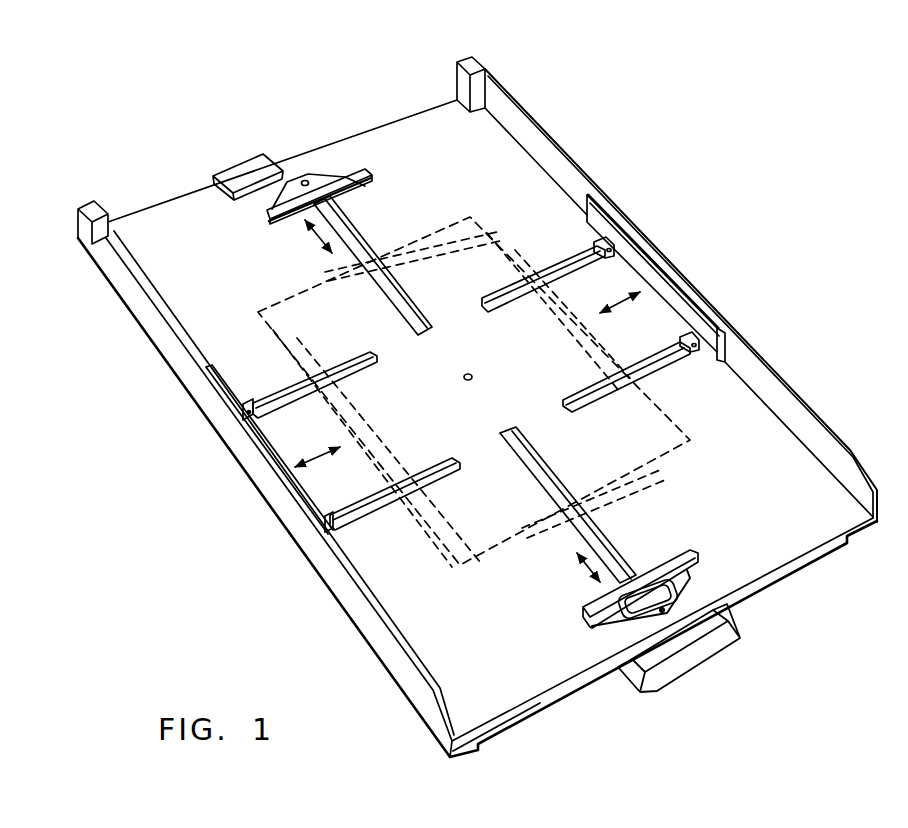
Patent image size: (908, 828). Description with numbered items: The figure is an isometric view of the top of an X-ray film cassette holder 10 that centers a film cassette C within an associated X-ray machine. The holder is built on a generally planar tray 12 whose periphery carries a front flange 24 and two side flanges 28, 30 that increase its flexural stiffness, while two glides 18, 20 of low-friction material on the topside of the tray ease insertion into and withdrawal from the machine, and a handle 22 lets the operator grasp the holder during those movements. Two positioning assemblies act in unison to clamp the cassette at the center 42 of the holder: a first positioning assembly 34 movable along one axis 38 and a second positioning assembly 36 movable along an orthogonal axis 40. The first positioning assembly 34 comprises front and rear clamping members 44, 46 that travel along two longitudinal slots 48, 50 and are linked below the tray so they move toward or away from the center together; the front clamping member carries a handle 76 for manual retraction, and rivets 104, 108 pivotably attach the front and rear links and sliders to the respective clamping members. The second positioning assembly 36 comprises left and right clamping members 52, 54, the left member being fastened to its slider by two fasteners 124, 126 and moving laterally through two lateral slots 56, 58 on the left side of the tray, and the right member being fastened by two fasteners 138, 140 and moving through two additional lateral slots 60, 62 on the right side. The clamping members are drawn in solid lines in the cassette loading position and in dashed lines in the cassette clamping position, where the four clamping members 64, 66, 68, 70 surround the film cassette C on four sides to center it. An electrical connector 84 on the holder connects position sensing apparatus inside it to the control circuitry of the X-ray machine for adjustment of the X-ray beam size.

The X-ray film cassette holder 10 is at (694, 236).
The tray 12 is at (786, 566).
The glide 18 is at (98, 204).
The glide 20 is at (468, 60).
The handle 22 is at (700, 668).
The front flange 24 is at (590, 695).
The side flange 28 is at (150, 290).
The side flange 30 is at (786, 376).
The first positioning assembly 34 is at (580, 628).
The second positioning assembly 36 is at (360, 552).
The axis 38 is at (580, 573).
The axis 40 is at (318, 460).
The center 42 is at (472, 380).
The front clamping member 44 is at (695, 558).
The rear clamping member 46 is at (376, 176).
The longitudinal slot 48 is at (625, 556).
The longitudinal slot 50 is at (343, 217).
The left clamping member 52 is at (228, 368).
The right clamping member 54 is at (720, 365).
The lateral slot 56 is at (382, 512).
The lateral slot 58 is at (285, 409).
The lateral slot 60 is at (660, 364).
The lateral slot 62 is at (575, 272).
The clamping member (clamping position) 64 is at (608, 522).
The clamping member (clamping position) 66 is at (400, 238).
The clamping member (clamping position) 68 is at (355, 406).
The clamping member (clamping position) 70 is at (596, 327).
The handle 76 is at (693, 582).
The electrical connector 84 is at (268, 160).
The rivet 104 is at (660, 618).
The rivet 108 is at (328, 172).
The fastener 124 is at (345, 497).
The fastener 126 is at (255, 403).
The fastener 138 is at (690, 340).
The fastener 140 is at (593, 246).
The film cassette C is at (662, 475).